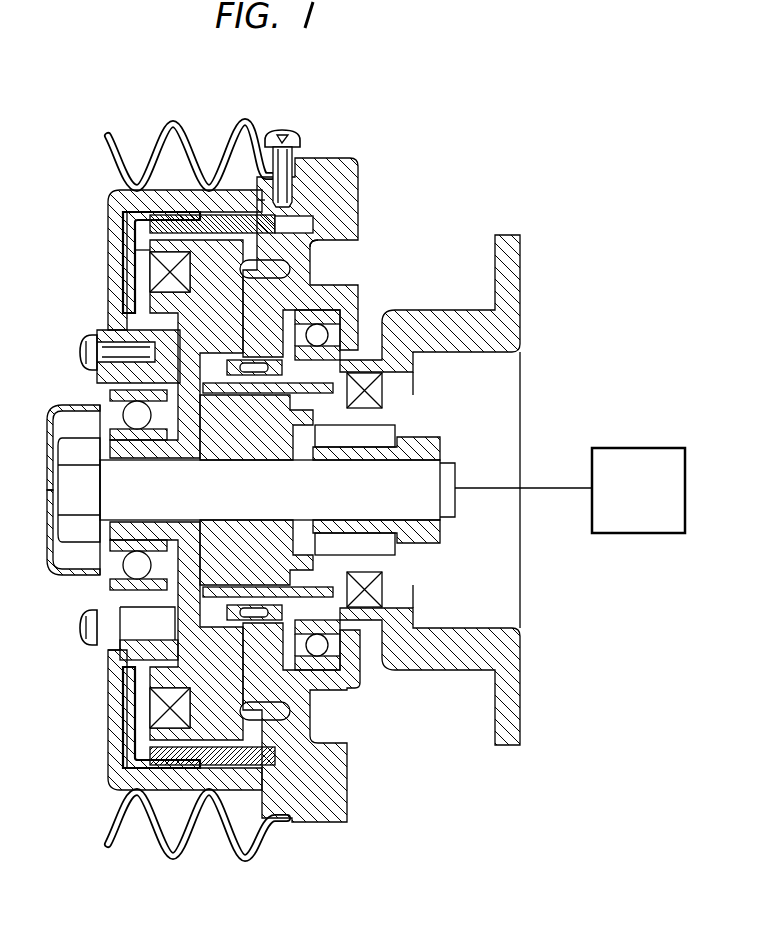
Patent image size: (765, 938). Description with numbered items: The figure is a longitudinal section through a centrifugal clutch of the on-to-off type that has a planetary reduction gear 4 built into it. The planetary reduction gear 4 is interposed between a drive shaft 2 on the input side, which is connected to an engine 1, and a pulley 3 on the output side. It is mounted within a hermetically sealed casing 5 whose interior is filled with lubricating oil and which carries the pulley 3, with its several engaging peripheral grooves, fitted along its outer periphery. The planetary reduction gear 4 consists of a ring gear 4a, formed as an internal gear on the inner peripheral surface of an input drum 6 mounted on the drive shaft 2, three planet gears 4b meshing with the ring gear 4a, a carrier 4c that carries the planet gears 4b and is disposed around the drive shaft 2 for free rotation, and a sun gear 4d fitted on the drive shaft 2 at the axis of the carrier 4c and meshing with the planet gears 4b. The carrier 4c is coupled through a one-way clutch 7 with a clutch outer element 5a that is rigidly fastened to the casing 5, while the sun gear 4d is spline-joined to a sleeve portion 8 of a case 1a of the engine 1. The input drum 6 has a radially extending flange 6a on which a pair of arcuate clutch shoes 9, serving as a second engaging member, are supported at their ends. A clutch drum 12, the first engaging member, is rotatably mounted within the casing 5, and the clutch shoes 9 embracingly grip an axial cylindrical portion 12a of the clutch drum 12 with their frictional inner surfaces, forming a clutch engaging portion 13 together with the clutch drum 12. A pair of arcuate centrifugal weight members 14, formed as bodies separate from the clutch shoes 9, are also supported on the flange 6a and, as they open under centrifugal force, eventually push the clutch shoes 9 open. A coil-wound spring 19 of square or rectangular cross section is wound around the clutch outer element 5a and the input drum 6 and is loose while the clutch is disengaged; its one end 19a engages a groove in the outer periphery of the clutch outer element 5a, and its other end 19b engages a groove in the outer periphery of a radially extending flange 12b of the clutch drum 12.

The engine 1 is at (640, 448).
The case 1a is at (452, 310).
The drive shaft 2 is at (445, 506).
The pulley 3 is at (185, 838).
The planetary reduction gear 4 is at (350, 700).
The ring gear 4a is at (187, 226).
The planet gears 4b is at (130, 290).
The carrier 4c is at (340, 280).
The sun gear 4d is at (231, 432).
The casing 5 is at (112, 212).
The clutch outer element 5a is at (287, 250).
The input drum 6 is at (130, 238).
The flange 6a is at (176, 436).
The one-way clutch 7 is at (280, 270).
The sleeve portion 8 is at (282, 392).
The clutch shoes 9 is at (130, 320).
The clutch drum 12 is at (135, 330).
The axial cylindrical portion 12a is at (148, 650).
The radially extending flange 12b is at (134, 250).
The clutch engaging portion 13 is at (50, 306).
The centrifugal weight members 14 is at (150, 275).
The coil-wound spring 19 is at (215, 190).
The one end 19a is at (297, 223).
The other end 19b is at (145, 218).